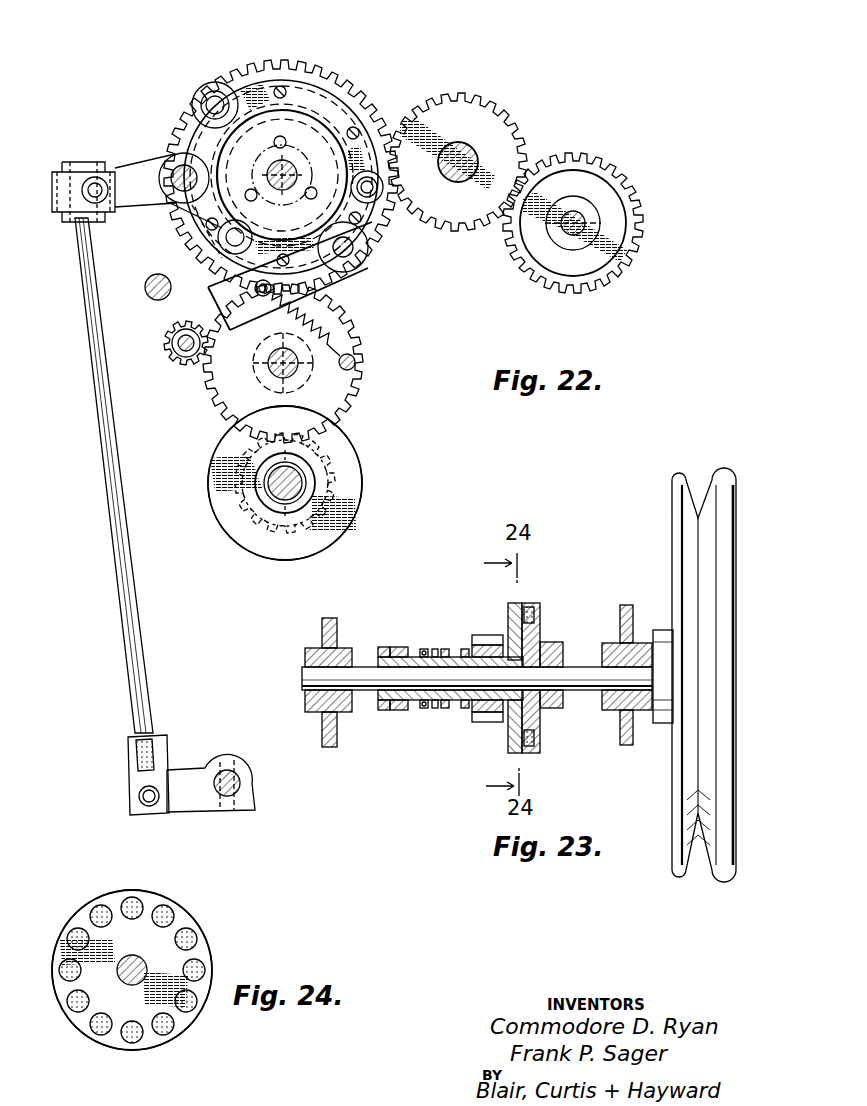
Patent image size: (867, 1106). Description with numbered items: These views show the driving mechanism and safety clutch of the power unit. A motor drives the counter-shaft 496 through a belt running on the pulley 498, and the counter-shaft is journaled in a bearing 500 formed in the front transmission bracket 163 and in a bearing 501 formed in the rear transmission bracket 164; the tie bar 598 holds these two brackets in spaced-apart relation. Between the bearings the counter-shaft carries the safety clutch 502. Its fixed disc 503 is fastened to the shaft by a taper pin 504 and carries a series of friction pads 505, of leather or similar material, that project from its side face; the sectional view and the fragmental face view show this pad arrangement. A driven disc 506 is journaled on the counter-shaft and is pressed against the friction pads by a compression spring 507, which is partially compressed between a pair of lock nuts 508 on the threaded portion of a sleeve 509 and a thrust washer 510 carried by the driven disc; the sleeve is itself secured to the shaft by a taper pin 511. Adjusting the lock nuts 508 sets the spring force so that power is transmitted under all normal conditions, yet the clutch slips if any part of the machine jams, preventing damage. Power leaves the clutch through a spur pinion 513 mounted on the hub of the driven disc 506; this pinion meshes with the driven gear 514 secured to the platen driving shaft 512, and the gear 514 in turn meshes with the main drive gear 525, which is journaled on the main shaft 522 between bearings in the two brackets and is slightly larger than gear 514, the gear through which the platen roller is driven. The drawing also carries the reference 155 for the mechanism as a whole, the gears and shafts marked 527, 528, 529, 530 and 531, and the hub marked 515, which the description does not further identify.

In FIG. 22, the drive mechanism 155 is at (412, 81).
In FIG. 22, the main drive gear 525 is at (277, 63).
In FIG. 22, the main shaft 522 is at (287, 160).
In FIG. 22, the gear 527 is at (501, 118).
In FIG. 22, the shaft 528 is at (458, 143).
In FIG. 22, the gear 529 is at (626, 192).
In FIG. 22, the shaft 530 is at (574, 211).
In FIG. 22, the hub 531 is at (566, 240).
In FIG. 22, the tie bar 598 is at (152, 277).
In FIG. 22, the driven gear 514 is at (352, 322).
In FIG. 22, the hub 515 is at (259, 383).
In FIG. 22, the platen driving shaft 512 is at (295, 379).
In FIG. 22, the taper pin 504 is at (248, 470).
In FIG. 23, the taper pin 504 is at (552, 660).
In FIG. 22, the fixed disc 503 is at (352, 493).
In FIG. 23, the fixed disc 503 is at (541, 718).
In FIG. 24, the fixed disc 503 is at (60, 986).
In FIG. 22, the spur pinion 513 is at (259, 512).
In FIG. 23, the spur pinion 513 is at (480, 635).
In FIG. 22, the counter-shaft 496 is at (300, 493).
In FIG. 23, the counter-shaft 496 is at (358, 670).
In FIG. 24, the counter-shaft 496 is at (133, 955).
In FIG. 22, the safety clutch 502 is at (204, 525).
In FIG. 23, the safety clutch 502 is at (541, 594).
In FIG. 24, the safety clutch 502 is at (210, 913).
In FIG. 23, the pulley 498 is at (674, 520).
In FIG. 23, the bearing 500 is at (306, 660).
In FIG. 23, the front transmission bracket 163 is at (322, 732).
In FIG. 23, the rear transmission bracket 164 is at (620, 736).
In FIG. 23, the bearing 501 is at (661, 702).
In FIG. 23, the friction pads 505 is at (536, 615).
In FIG. 24, the friction pads 505 is at (77, 934).
In FIG. 23, the driven disc 506 is at (500, 722).
In FIG. 23, the compression spring 507 is at (423, 648).
In FIG. 23, the lock nuts 508 is at (400, 710).
In FIG. 23, the threaded sleeve 509 is at (432, 708).
In FIG. 23, the thrust washer 510 is at (466, 708).
In FIG. 23, the taper pin 511 is at (445, 648).